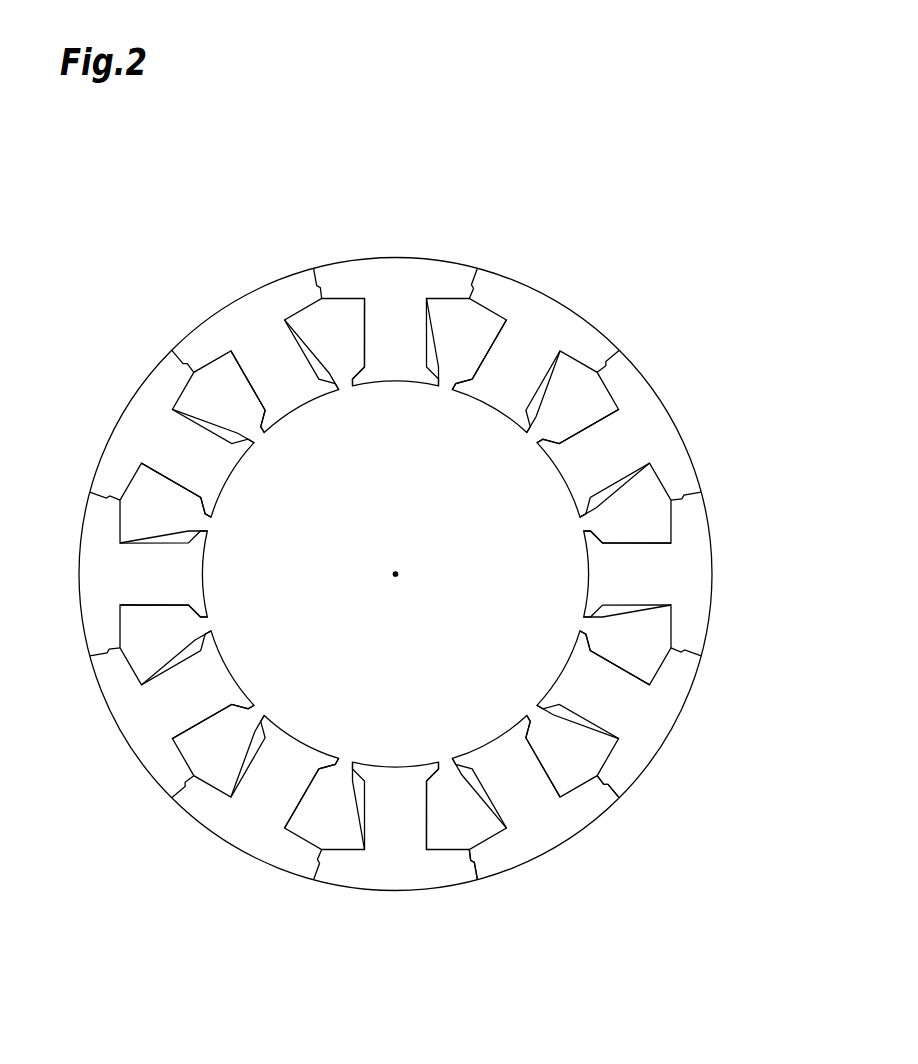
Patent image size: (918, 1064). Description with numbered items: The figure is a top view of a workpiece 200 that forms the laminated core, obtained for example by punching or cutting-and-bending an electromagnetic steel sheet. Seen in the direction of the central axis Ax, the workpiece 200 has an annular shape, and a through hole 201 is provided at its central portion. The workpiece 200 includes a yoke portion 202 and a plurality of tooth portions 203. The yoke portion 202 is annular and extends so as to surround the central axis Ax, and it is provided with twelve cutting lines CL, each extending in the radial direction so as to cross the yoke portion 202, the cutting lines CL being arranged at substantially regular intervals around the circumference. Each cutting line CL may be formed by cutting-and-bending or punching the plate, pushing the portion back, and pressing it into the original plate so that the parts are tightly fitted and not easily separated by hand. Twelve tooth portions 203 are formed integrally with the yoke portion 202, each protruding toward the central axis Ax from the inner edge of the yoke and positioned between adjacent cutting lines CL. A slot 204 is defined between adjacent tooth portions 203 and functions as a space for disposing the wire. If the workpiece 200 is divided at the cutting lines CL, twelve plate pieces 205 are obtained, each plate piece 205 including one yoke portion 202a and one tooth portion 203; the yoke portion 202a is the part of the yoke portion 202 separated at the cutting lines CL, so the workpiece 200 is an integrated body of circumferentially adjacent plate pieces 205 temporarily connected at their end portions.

The workpiece 200 is at (622, 145).
The through hole 201 is at (549, 542).
The yoke portion 202 is at (412, 266).
The yoke portion 202a is at (651, 741).
The tooth portion 203 is at (392, 366).
The slot 204 is at (216, 379).
The plate piece 205 is at (547, 315).
The cutting line CL is at (480, 270).
The central axis Ax is at (397, 576).